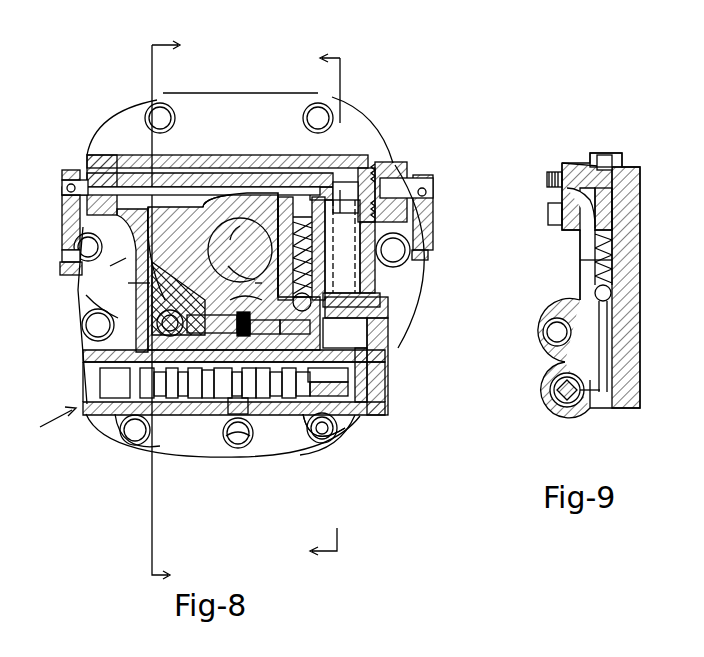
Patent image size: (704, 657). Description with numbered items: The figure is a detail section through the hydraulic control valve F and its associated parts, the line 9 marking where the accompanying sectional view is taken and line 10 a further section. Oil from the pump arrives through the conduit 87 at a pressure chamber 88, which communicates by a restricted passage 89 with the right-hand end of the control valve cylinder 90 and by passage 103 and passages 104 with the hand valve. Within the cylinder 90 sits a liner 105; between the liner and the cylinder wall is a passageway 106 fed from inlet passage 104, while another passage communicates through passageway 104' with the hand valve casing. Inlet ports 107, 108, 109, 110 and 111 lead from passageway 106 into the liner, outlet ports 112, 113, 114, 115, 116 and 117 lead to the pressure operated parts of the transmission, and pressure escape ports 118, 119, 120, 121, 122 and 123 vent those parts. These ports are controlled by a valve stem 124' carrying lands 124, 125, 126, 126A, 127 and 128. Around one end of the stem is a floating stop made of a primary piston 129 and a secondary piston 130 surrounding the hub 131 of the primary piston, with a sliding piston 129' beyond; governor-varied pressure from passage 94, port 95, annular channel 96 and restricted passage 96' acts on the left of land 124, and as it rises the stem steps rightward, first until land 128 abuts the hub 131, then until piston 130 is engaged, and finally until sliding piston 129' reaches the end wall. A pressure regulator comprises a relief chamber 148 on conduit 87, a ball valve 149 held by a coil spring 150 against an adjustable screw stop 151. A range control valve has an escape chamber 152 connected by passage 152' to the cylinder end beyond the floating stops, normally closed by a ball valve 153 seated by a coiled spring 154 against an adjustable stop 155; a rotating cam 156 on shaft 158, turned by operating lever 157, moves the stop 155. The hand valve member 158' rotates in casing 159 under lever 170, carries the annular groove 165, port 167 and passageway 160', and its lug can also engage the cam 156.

In FIG. 8, the section line 10- 10 is at (178, 312).
In FIG. 8, the section line 9— 9 is at (316, 306).
In FIG. 8, the hand valve member 158' is at (227, 144).
In FIG. 8, the hand valve casing 159 is at (232, 155).
In FIG. 8, the annular groove or passageway 165 is at (175, 147).
In FIG. 8, the passageway 160' is at (368, 129).
In FIG. 8, the adjustable screw stop 151 is at (300, 170).
In FIG. 8, the rotating cam 156 is at (380, 172).
In FIG. 9, the rotating cam 156 is at (623, 182).
In FIG. 8, the cam shaft 158 is at (425, 171).
In FIG. 8, the operating lever 157 is at (432, 212).
In FIG. 8, the relief chamber 148 is at (410, 240).
In FIG. 8, the ball valve 149 is at (405, 265).
In FIG. 8, the coil spring 150 is at (320, 262).
In FIG. 8, the passageway 104' is at (180, 250).
In FIG. 8, the passage 94 is at (220, 225).
In FIG. 8, the pressure escape port 119 is at (210, 250).
In FIG. 8, the valve land 126 is at (232, 242).
In FIG. 8, the passageway 106 is at (236, 270).
In FIG. 8, the inlet port 110 is at (241, 290).
In FIG. 8, the pressure escape port 120 is at (265, 281).
In FIG. 8, the port 95 is at (182, 246).
In FIG. 8, the port 167 is at (100, 247).
In FIG. 8, the passage 104 is at (112, 263).
In FIG. 8, the passage 103 is at (125, 281).
In FIG. 8, the annular channel 96 is at (98, 298).
In FIG. 8, the valve land 125 is at (157, 320).
In FIG. 8, the lever 170 is at (64, 220).
In FIG. 8, the restricted passage 96' is at (211, 351).
In FIG. 8, the inlet port 107 is at (105, 380).
In FIG. 8, the valve stem 124' is at (204, 382).
In FIG. 8, the valve land 124 is at (219, 432).
In FIG. 8, the automatic control valve F is at (47, 423).
In FIG. 8, the outlet port 112 is at (148, 400).
In FIG. 8, the pressure escape port 118 is at (160, 400).
In FIG. 8, the outlet port 113 is at (172, 400).
In FIG. 8, the outlet port 114 is at (183, 400).
In FIG. 8, the inlet port 108 is at (195, 400).
In FIG. 8, the inlet port 109 is at (208, 400).
In FIG. 8, the valve land 126A is at (215, 400).
In FIG. 8, the valve land 127 is at (262, 400).
In FIG. 8, the outlet port 116 is at (272, 400).
In FIG. 8, the outlet port 115 is at (208, 412).
In FIG. 8, the hub 131 is at (300, 400).
In FIG. 8, the valve land 128 is at (286, 400).
In FIG. 8, the outlet port 117 is at (272, 400).
In FIG. 8, the inlet port 111 is at (258, 400).
In FIG. 8, the conduit 87 is at (300, 348).
In FIG. 8, the pressure escape port 121 is at (265, 331).
In FIG. 8, the pressure escape port 122 is at (295, 331).
In FIG. 8, the pressure escape port 123 is at (312, 356).
In FIG. 8, the pressure chamber 88 is at (388, 328).
In FIG. 9, the pressure chamber 88 is at (545, 338).
In FIG. 8, the restricted passage 89 is at (380, 360).
In FIG. 8, the primary piston 129 is at (374, 381).
In FIG. 9, the primary piston 129 is at (610, 410).
In FIG. 8, the sliding piston 129' is at (387, 396).
In FIG. 9, the sliding piston 129' is at (584, 416).
In FIG. 8, the control valve cylinder 90 is at (345, 418).
In FIG. 9, the control valve cylinder 90 is at (555, 405).
In FIG. 8, the secondary piston 130 is at (330, 428).
In FIG. 8, the liner 105 is at (335, 440).
In FIG. 9, the liner 105 is at (548, 392).
In FIG. 9, the adjustable stop 155 is at (605, 210).
In FIG. 9, the coiled spring 154 is at (612, 228).
In FIG. 9, the escape chamber 152 is at (633, 250).
In FIG. 9, the ball valve 153 is at (612, 282).
In FIG. 9, the passage 152' is at (643, 346).